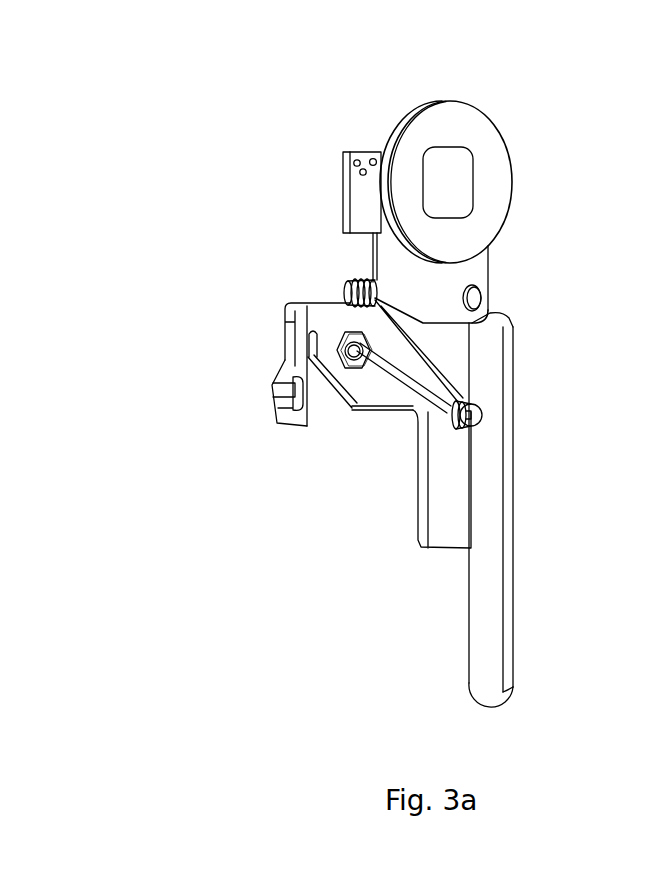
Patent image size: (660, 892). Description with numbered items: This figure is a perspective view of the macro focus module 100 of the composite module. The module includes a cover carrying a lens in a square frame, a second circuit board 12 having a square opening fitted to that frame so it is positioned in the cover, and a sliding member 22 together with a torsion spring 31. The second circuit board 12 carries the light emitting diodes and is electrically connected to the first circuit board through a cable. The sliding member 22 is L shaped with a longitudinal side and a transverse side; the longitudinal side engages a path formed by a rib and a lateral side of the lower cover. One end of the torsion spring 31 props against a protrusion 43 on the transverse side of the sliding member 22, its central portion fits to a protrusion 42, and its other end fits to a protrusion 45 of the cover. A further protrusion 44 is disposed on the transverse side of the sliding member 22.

The macro focus module 100 is at (170, 95).
The second circuit board 12 is at (360, 208).
The torsion spring 31 is at (428, 347).
The protrusion 45 is at (347, 290).
The protrusion 43 is at (345, 352).
The protrusion 44 is at (283, 393).
The protrusion 42 is at (482, 414).
The sliding member 22 is at (493, 536).